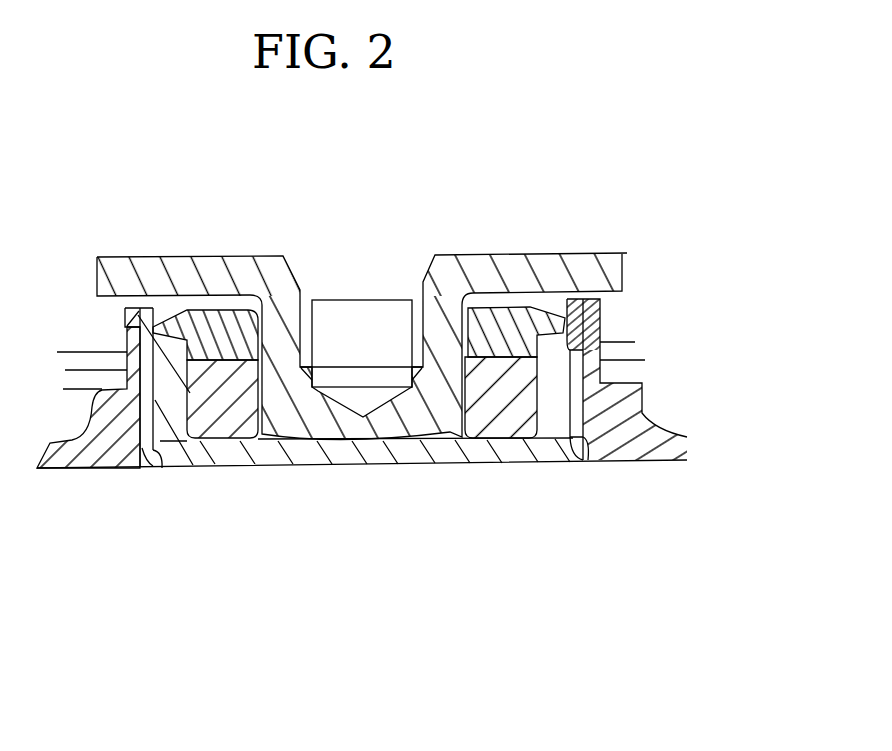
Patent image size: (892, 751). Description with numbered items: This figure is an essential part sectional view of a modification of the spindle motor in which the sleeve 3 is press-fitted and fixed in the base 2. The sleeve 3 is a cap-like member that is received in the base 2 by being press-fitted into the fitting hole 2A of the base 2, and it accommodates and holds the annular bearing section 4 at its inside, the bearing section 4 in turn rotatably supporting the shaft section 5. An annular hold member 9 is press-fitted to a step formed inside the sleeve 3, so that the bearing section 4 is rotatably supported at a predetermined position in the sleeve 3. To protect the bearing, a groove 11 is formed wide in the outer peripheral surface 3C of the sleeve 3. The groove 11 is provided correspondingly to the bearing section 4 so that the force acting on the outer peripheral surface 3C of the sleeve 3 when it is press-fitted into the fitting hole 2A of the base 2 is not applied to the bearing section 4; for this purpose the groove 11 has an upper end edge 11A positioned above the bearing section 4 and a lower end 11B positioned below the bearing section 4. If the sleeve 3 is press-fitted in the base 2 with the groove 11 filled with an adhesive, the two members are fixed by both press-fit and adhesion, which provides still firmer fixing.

The base 2 is at (83, 462).
The fitting hole 2A is at (160, 462).
The sleeve 3 is at (313, 457).
The outer peripheral surface 3C is at (133, 312).
The bearing section 4 is at (493, 428).
The shaft section 5 is at (448, 283).
The hold member 9 is at (508, 317).
The groove 11 is at (575, 416).
The upper end edge 11A is at (602, 327).
The lower end 11B is at (578, 445).